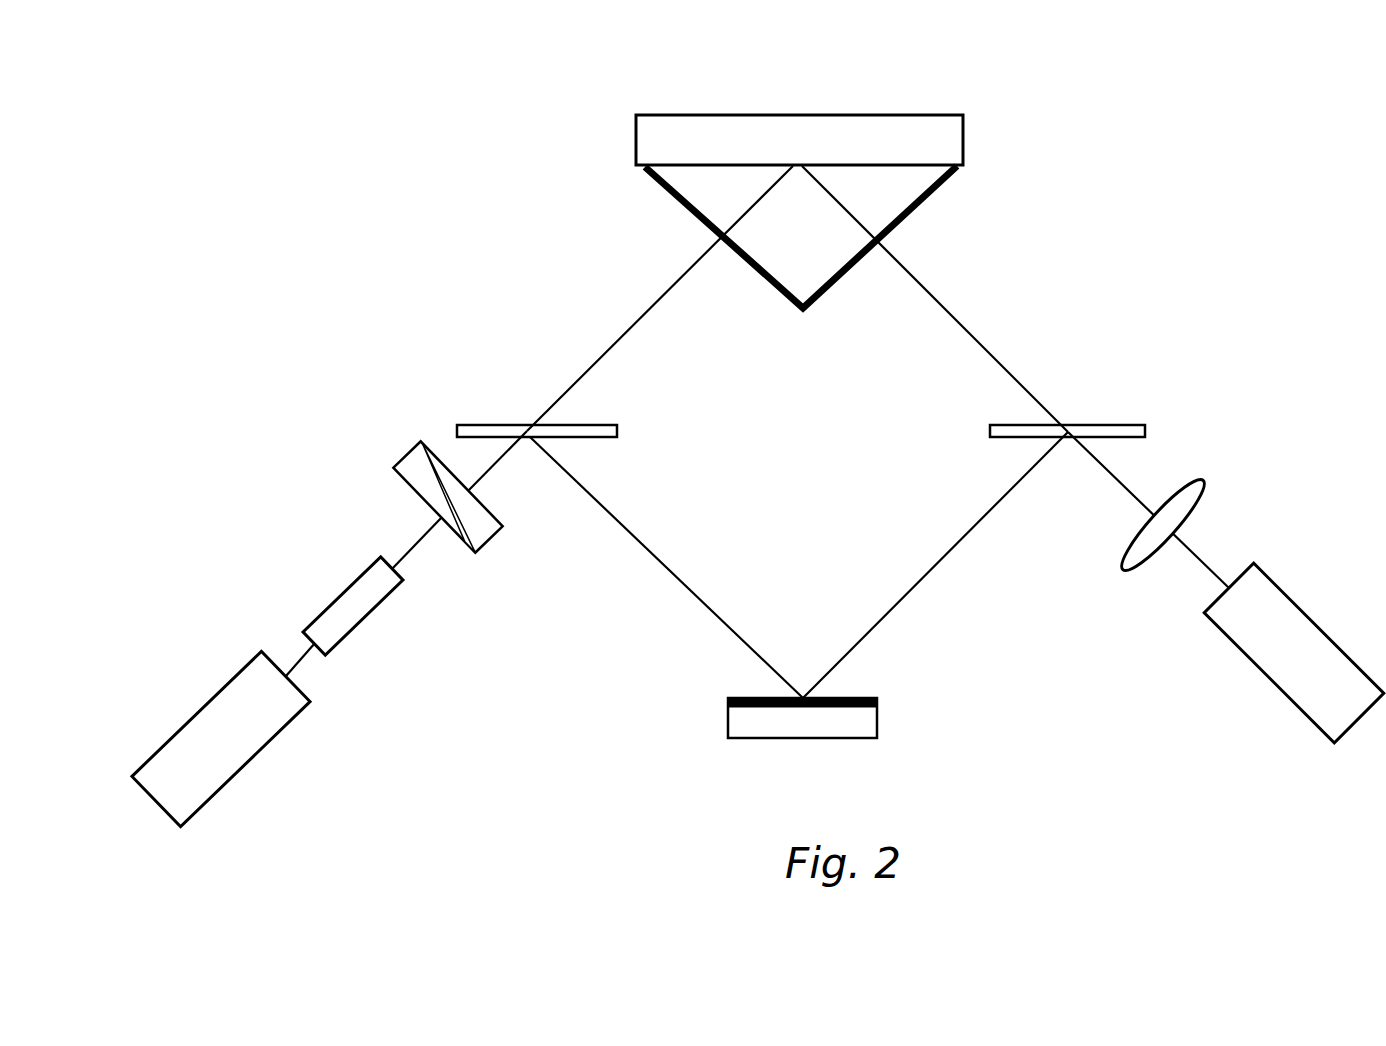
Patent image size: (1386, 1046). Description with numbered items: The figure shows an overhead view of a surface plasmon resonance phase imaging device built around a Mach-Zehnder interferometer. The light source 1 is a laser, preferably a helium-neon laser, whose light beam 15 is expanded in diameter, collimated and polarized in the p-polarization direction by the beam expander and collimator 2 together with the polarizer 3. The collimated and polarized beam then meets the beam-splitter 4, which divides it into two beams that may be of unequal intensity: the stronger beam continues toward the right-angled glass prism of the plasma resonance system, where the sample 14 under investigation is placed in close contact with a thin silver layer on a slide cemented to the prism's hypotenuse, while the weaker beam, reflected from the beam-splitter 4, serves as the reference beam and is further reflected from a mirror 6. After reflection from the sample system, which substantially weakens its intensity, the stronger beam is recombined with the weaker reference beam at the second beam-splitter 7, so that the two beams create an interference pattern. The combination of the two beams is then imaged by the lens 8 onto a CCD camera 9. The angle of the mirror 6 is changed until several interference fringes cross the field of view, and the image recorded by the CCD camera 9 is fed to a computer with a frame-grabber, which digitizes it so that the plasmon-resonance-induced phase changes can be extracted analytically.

The light source 1 is at (221, 738).
The beam expander and collimator 2 is at (269, 605).
The polarizer 3 is at (384, 520).
The beam-splitter 4 is at (558, 386).
The mirror 6 is at (815, 751).
The second beam-splitter 7 is at (1056, 385).
The lens 8 is at (1242, 504).
The CCD camera 9 is at (1294, 653).
The sample 14 is at (799, 116).
The light beam 15 is at (865, 237).